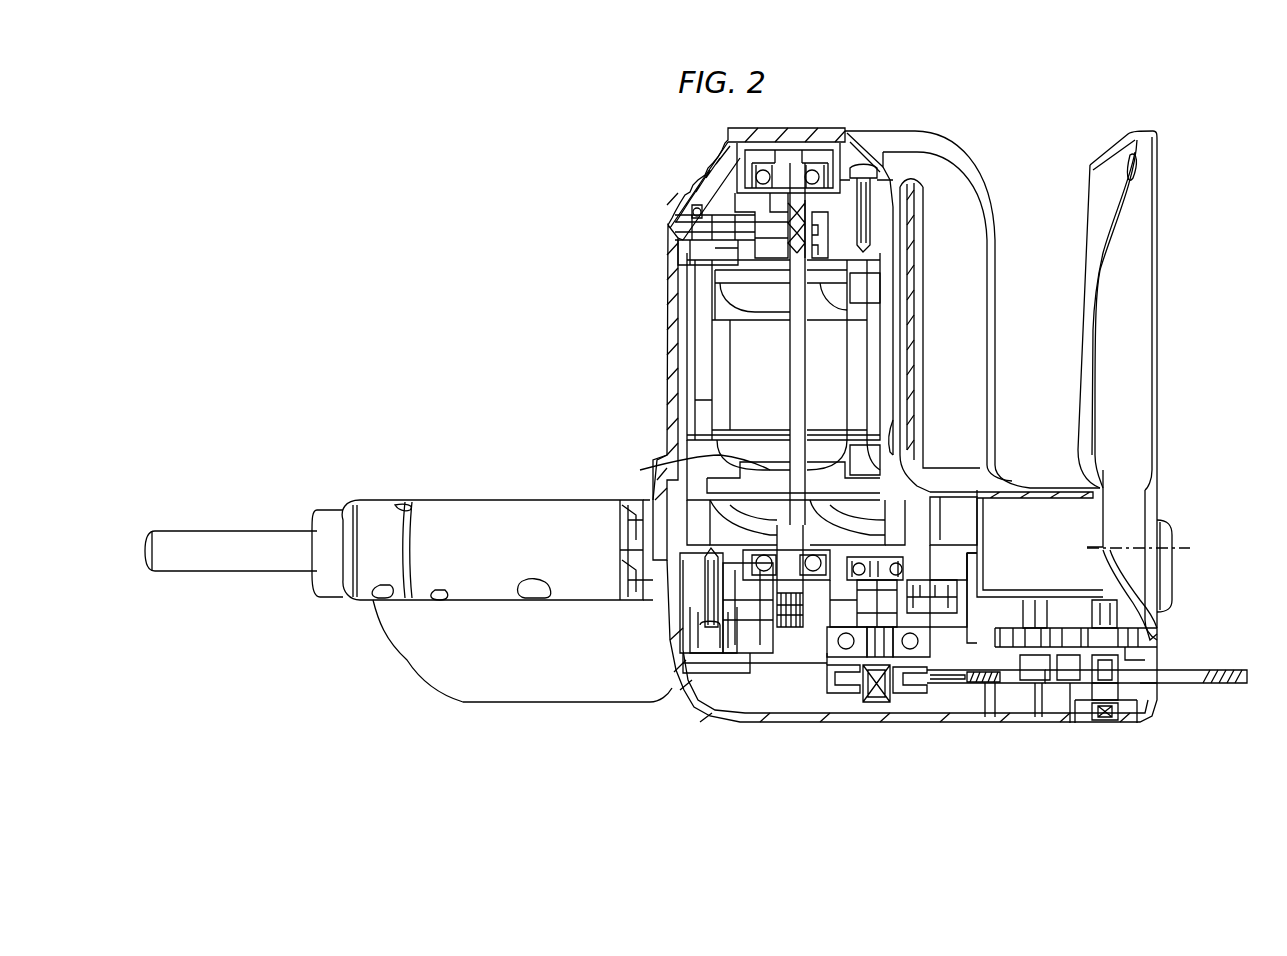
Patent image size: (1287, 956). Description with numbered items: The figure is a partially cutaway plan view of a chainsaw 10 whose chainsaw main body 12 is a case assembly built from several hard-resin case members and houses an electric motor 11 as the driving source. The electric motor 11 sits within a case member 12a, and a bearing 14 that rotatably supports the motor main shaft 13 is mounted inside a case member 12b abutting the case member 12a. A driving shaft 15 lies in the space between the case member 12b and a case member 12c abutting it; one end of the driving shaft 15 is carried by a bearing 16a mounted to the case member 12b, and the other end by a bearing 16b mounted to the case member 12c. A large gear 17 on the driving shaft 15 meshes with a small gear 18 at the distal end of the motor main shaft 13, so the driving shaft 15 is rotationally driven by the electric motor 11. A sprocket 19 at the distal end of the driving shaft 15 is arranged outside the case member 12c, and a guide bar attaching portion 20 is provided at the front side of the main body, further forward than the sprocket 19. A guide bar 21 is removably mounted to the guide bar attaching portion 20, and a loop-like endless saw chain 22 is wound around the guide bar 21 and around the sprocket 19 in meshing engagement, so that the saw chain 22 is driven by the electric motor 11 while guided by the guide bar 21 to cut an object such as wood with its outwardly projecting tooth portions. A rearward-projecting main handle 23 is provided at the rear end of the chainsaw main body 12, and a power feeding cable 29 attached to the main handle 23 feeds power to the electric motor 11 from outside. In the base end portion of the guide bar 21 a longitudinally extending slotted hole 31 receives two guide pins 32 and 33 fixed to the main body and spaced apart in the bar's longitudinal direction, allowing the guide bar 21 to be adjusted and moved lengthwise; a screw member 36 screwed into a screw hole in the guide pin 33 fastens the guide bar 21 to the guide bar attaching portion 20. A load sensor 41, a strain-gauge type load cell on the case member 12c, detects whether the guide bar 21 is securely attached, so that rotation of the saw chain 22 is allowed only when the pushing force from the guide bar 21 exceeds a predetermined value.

The chainsaw 10 is at (1171, 196).
The electric motor 11 is at (830, 345).
The chainsaw main body 12 is at (665, 333).
The case member 12a is at (905, 380).
The case member 12b is at (950, 545).
The case member 12c is at (972, 683).
The motor main shaft 13 is at (660, 462).
The bearing 14 is at (748, 575).
The driving shaft 15 is at (866, 655).
The bearing 16a is at (873, 580).
The bearing 16b is at (930, 650).
The large gear 17 is at (806, 598).
The small gear 18 is at (778, 597).
The sprocket 19 is at (838, 660).
The guide bar attaching portion 20 is at (1153, 653).
The guide bar 21 is at (1220, 684).
The saw chain 22 is at (947, 685).
The main handle 23 is at (497, 525).
The power feeding cable 29 is at (237, 548).
The slotted hole 31 is at (1177, 684).
The guide pin 32 is at (1032, 647).
The guide pin 33 is at (1127, 640).
The screw member 36 is at (1106, 722).
The load sensor 41 is at (1063, 663).